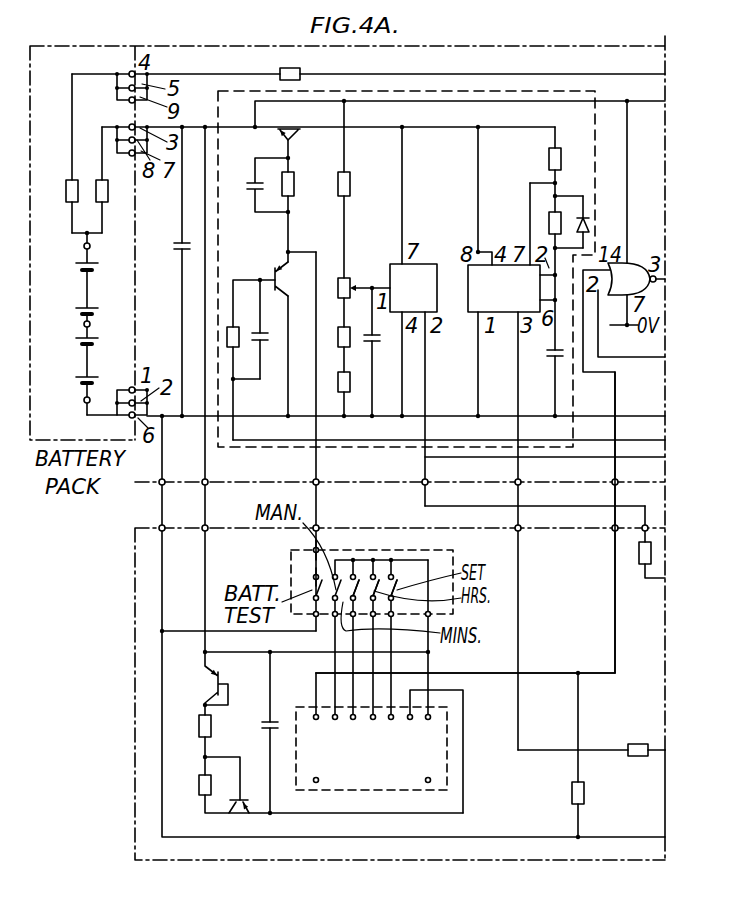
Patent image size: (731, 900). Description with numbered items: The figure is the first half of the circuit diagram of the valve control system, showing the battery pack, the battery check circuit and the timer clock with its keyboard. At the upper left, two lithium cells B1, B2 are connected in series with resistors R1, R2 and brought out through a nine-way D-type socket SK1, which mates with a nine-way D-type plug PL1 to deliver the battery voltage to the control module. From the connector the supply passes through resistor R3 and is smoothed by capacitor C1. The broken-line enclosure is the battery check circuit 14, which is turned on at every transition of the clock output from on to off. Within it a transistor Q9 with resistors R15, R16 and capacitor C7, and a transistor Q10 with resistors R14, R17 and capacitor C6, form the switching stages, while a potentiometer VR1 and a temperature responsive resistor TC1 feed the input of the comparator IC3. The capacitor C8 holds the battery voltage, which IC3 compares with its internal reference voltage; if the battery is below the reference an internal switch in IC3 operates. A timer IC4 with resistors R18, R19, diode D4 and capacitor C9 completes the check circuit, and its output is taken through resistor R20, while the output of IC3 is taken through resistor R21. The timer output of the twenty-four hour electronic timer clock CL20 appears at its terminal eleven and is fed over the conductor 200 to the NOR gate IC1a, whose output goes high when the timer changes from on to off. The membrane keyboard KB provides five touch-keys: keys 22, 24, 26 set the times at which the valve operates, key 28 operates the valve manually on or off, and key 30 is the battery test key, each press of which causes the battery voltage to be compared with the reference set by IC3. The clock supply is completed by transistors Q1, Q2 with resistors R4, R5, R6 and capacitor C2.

The socket SK1 is at (128, 62).
The plug PL1 is at (139, 62).
The resistor R1 is at (59, 153).
The resistor R2 is at (112, 187).
The resistor R3 is at (304, 63).
The battery B1 is at (79, 277).
The battery B2 is at (79, 368).
The capacitor C1 is at (171, 235).
The battery check circuit 14 is at (453, 86).
The transistor Q9 is at (288, 122).
The capacitor C7 is at (256, 185).
The resistor R15 is at (307, 185).
The resistor R16 is at (363, 185).
The transistor Q10 is at (267, 271).
The capacitor C6 is at (267, 324).
The resistor R14 is at (226, 336).
The resistor R17 is at (337, 336).
The potentiometer VR1 is at (360, 276).
The capacitor C8 is at (380, 350).
The temperature responsive resistor TC1 is at (351, 382).
The integrated circuit IC3 is at (427, 300).
The integrated circuit IC4 is at (520, 300).
The resistor R18 is at (536, 160).
The resistor R19 is at (548, 223).
The diode D4 is at (575, 211).
The capacitor C9 is at (545, 365).
The NOR gate IC1a is at (620, 291).
The conductor 200 is at (622, 373).
The resistor R21 is at (639, 551).
The resistor R20 is at (591, 737).
The resistor R6 is at (594, 795).
The membrane keyboard KB is at (449, 553).
The touch-key 22 is at (395, 590).
The touch-key 24 is at (376, 590).
The touch-key 26 is at (355, 590).
The touch-key 28 is at (312, 553).
The battery test key 30 is at (312, 578).
The electronic timer clock CL20 is at (452, 747).
The transistor Q1 is at (201, 683).
The resistor R4 is at (191, 736).
The resistor R5 is at (199, 785).
The transistor Q2 is at (240, 819).
The capacitor C2 is at (259, 713).